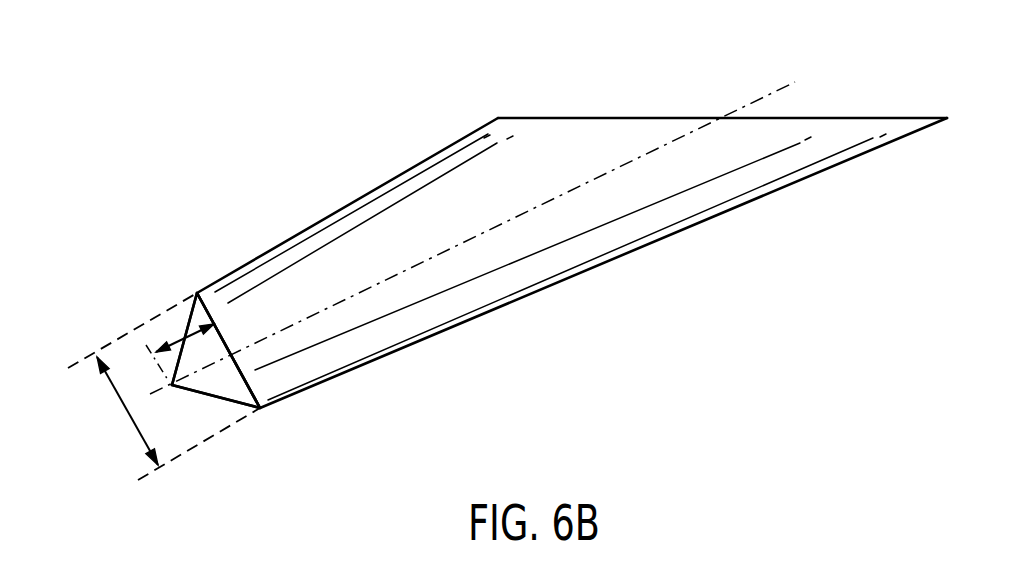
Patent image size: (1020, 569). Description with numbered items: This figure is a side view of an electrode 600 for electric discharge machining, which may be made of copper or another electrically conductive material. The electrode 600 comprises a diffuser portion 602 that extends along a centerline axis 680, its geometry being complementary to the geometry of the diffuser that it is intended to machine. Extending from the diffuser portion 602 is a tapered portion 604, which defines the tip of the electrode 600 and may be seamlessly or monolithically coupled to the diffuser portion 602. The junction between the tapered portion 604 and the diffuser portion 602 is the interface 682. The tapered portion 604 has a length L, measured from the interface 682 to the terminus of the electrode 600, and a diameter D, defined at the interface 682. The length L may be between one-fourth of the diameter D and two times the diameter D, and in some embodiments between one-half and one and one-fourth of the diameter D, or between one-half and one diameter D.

The electrode 600 is at (238, 71).
The diffuser portion 602 is at (520, 273).
The tapered portion 604 is at (212, 383).
The centerline axis 680 is at (771, 94).
The interface 682 is at (251, 383).
The diameter D is at (125, 410).
The length L is at (180, 341).